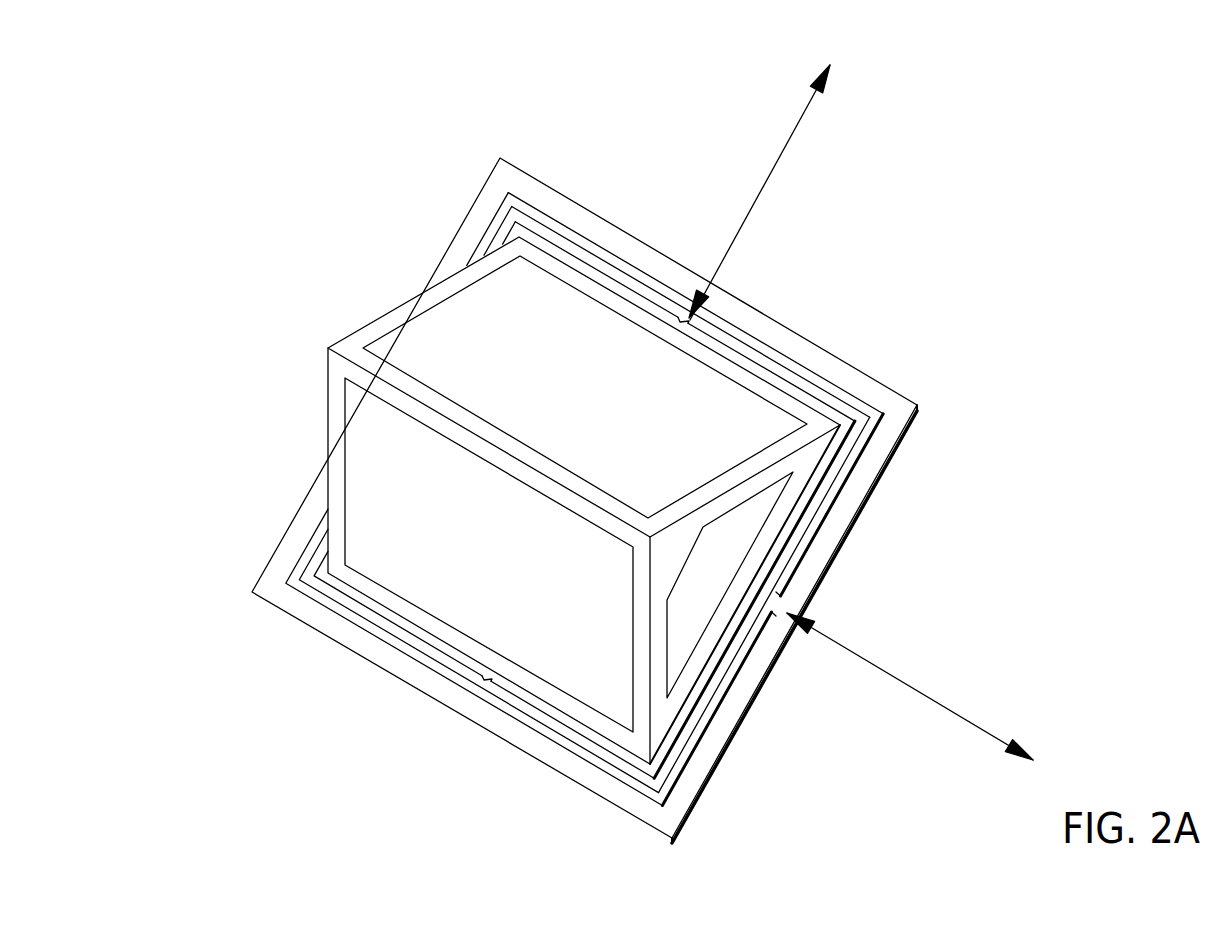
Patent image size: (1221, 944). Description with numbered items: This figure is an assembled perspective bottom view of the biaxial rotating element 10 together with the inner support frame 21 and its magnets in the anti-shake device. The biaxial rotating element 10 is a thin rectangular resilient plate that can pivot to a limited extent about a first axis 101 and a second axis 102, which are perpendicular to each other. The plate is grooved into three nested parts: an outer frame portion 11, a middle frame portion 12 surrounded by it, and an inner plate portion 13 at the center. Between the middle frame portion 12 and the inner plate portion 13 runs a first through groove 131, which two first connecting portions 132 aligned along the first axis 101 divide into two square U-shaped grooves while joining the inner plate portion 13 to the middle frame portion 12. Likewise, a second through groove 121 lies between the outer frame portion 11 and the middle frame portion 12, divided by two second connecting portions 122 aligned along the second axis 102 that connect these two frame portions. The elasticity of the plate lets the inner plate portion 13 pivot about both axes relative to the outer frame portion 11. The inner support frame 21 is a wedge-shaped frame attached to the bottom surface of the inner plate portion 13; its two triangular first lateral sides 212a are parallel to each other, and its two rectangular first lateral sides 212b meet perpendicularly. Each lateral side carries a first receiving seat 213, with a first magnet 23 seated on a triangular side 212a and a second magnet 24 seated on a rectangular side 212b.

The biaxial rotating element 10 is at (613, 500).
The first axis 101 is at (753, 207).
The second axis 102 is at (905, 684).
The outer frame portion 11 is at (880, 384).
The middle frame portion 12 is at (630, 499).
The second through groove 121 is at (768, 353).
The second connecting portion 122 is at (770, 603).
The inner plate portion 13 is at (644, 500).
The first through groove 131 is at (788, 387).
The first connecting portion 132 is at (693, 325).
The inner support frame 21 is at (572, 459).
The first lateral side 212a is at (660, 662).
The first lateral side 212b is at (375, 326).
The first receiving seat 213 is at (440, 297).
The first magnet 23 is at (753, 525).
The second magnet 24 is at (422, 335).